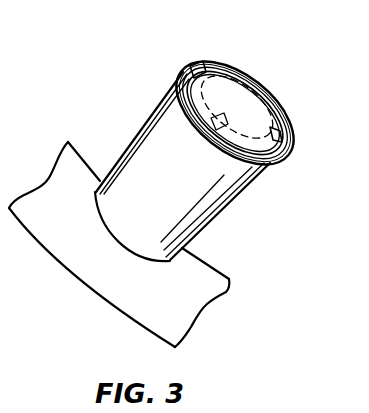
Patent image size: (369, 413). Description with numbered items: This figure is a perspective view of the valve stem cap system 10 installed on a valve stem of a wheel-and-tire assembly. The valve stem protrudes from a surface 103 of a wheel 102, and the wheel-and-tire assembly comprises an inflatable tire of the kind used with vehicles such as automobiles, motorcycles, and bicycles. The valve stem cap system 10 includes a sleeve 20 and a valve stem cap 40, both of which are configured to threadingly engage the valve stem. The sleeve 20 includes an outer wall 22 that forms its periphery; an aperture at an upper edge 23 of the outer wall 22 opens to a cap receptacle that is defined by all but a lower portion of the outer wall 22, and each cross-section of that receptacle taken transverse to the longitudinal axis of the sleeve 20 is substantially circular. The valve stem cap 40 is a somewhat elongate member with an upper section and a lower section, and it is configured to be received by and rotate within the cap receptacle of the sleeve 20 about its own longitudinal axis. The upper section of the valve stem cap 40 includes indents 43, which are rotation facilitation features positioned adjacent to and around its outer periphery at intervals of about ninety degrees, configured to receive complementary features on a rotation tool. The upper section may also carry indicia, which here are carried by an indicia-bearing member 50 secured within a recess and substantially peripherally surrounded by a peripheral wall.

The valve stem cap system 10 is at (104, 80).
The sleeve 20 is at (137, 172).
The outer wall 22 is at (249, 183).
The upper edge 23 is at (278, 151).
The valve stem cap 40 is at (202, 62).
The indents 43 is at (186, 68).
The indicia-bearing member 50 is at (236, 101).
The wheel 102 is at (196, 337).
The surface 103 is at (207, 287).